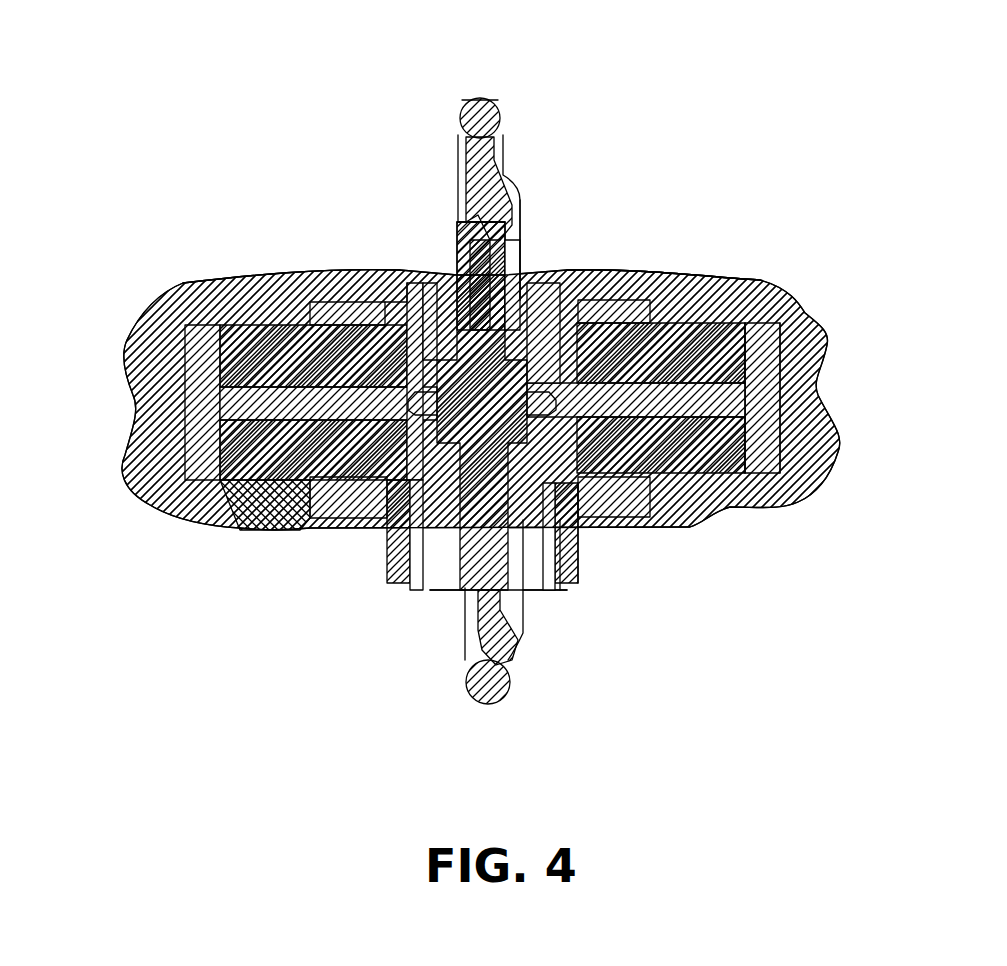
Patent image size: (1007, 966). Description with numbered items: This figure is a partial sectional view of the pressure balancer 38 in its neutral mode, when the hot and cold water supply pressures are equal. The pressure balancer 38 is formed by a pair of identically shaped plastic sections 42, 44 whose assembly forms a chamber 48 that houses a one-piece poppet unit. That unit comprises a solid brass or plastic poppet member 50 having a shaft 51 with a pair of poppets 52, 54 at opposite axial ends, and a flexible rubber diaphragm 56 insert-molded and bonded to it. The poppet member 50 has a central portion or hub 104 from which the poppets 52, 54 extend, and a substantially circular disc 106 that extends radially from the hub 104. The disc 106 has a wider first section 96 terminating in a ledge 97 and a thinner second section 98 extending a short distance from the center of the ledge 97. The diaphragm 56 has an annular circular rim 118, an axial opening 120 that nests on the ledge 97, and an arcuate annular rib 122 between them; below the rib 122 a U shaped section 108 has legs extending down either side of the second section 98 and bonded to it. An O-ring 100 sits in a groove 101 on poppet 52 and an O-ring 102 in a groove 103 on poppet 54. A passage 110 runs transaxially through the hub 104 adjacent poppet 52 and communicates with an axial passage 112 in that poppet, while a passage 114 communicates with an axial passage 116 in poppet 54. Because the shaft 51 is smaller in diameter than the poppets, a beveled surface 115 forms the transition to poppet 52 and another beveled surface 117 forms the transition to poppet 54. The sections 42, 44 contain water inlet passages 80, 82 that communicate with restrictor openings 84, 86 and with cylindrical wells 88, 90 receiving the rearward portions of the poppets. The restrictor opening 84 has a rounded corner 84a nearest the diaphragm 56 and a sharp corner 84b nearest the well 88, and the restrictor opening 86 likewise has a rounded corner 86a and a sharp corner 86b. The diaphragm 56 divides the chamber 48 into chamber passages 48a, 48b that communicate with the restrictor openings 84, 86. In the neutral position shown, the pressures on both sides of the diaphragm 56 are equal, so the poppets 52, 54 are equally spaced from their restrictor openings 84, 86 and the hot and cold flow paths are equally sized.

The pressure balancer 38 is at (290, 104).
The plastic section 42 is at (195, 300).
The plastic section 44 is at (770, 290).
The chamber 48 is at (452, 640).
The chamber passage 48a is at (437, 600).
The chamber passage 48b is at (520, 615).
The poppet member 50 is at (210, 455).
The shaft 51 is at (585, 525).
The poppet 52 is at (300, 290).
The poppet 54 is at (770, 380).
The flexible diaphragm 56 is at (502, 118).
The water inlet passage 80 is at (318, 535).
The water inlet passage 82 is at (597, 570).
The restrictor opening 84 is at (425, 345).
The rounded corner 84a is at (410, 300).
The sharp corner 84b is at (372, 312).
The restrictor opening 86 is at (600, 352).
The rounded corner 86a is at (600, 440).
The sharp corner 86b is at (620, 312).
The cylindrical well 88 is at (250, 367).
The cylindrical well 90 is at (770, 352).
The first section 96 is at (555, 295).
The ledge 97 is at (507, 318).
The second section 98 is at (490, 255).
The O-ring 100 is at (345, 548).
The groove 101 is at (290, 290).
The O-ring 102 is at (660, 500).
The groove 103 is at (700, 285).
The central portion 104 is at (400, 580).
The disc 106 is at (482, 406).
The U shaped section 108 is at (455, 228).
The passage 110 is at (392, 566).
The passage 112 is at (245, 538).
The passage 114 is at (600, 530).
The beveled surface 115 is at (482, 390).
The passage 116 is at (770, 430).
The beveled surface 117 is at (620, 520).
The annular circular rim 118 is at (462, 100).
The axial opening 120 is at (450, 300).
The arcuate annular rib 122 is at (522, 205).